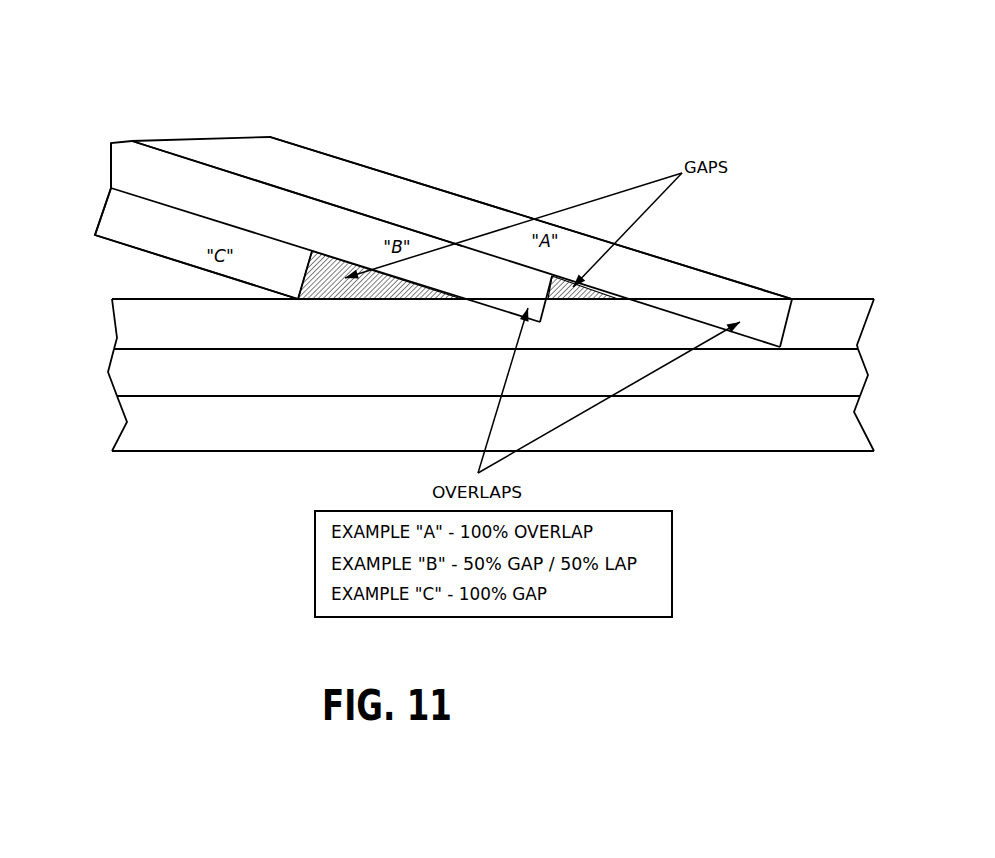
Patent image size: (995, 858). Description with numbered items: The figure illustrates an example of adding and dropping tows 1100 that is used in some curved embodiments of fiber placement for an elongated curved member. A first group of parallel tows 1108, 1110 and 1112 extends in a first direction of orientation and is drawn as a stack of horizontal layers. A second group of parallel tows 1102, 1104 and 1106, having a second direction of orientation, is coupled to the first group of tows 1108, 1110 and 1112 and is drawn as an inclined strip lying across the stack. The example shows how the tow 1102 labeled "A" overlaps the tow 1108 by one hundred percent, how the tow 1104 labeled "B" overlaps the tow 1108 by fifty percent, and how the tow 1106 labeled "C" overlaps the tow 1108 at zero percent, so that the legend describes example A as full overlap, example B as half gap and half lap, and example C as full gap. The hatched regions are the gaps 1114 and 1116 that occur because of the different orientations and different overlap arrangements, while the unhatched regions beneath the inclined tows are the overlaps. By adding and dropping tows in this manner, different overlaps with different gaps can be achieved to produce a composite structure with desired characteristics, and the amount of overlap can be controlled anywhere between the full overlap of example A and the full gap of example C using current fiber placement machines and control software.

The adding and dropping tows example 1100 is at (527, 123).
The tow 1102 is at (375, 197).
The tow 1104 is at (203, 197).
The tow 1106 is at (123, 233).
The tow 1108 is at (142, 333).
The tow 1110 is at (133, 369).
The tow 1112 is at (193, 437).
The gap 1114 is at (572, 299).
The gap 1116 is at (357, 300).